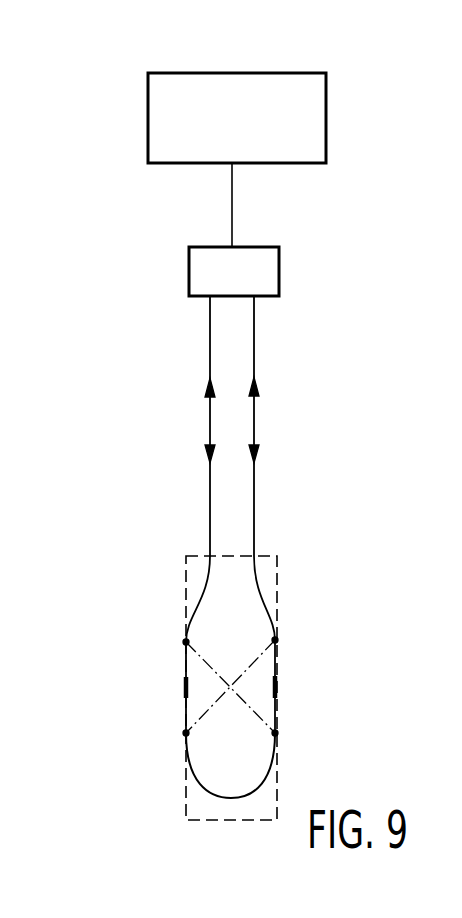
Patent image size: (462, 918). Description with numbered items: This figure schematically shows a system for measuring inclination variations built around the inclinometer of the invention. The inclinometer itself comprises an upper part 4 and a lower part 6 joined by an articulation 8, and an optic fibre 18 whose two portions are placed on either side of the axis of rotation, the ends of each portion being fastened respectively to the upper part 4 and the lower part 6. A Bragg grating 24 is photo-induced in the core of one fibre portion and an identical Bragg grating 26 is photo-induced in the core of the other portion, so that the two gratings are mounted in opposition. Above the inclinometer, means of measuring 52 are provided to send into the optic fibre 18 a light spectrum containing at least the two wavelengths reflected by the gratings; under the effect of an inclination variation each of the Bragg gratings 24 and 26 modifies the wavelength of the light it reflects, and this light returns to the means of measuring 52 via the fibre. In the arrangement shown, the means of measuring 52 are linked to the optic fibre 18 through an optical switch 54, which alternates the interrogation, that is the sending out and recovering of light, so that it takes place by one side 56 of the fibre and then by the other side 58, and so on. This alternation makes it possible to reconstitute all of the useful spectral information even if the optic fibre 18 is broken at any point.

The means of measuring 52 is at (292, 78).
The optical switch 54 is at (275, 260).
The optic fibre 18 is at (255, 506).
The side of the optic fibre 56 is at (270, 360).
The other side of the optic fibre 58 is at (195, 350).
The upper part 4 is at (185, 573).
The lower part 6 is at (183, 803).
The articulation 8 is at (230, 683).
The Bragg grating 24 is at (277, 683).
The Bragg grating 26 is at (183, 690).